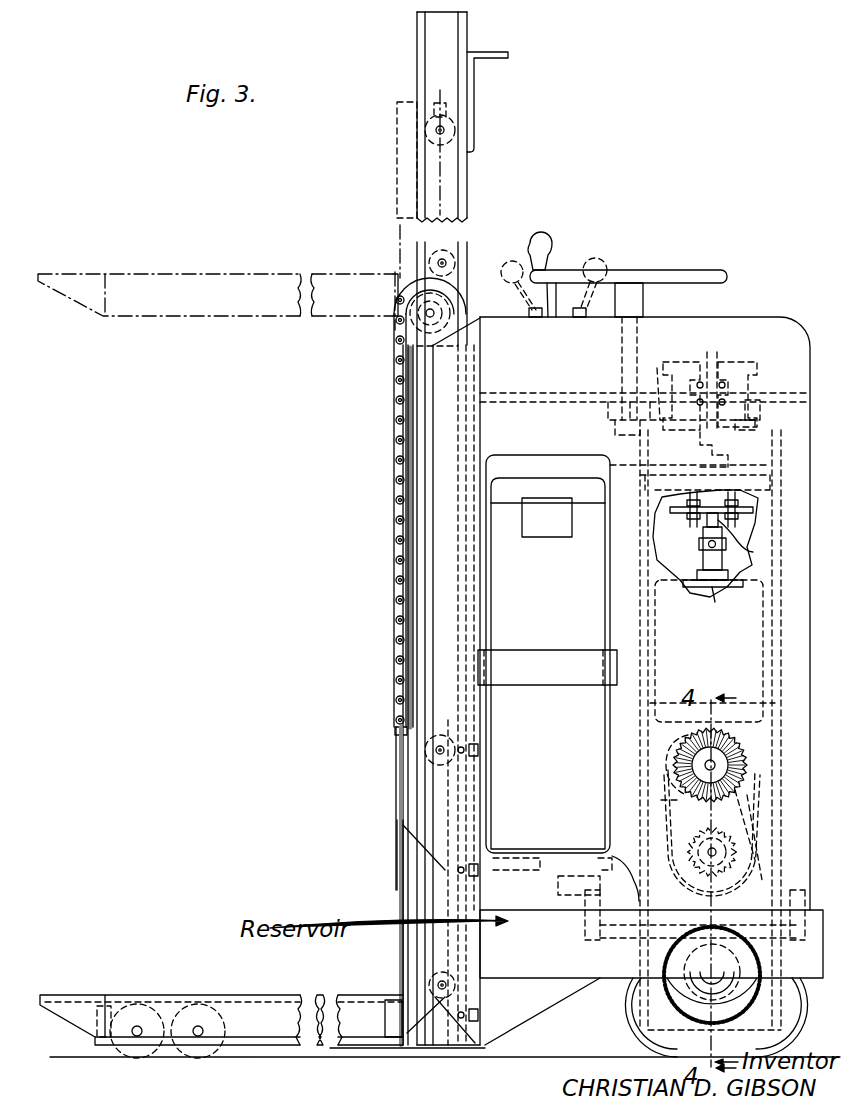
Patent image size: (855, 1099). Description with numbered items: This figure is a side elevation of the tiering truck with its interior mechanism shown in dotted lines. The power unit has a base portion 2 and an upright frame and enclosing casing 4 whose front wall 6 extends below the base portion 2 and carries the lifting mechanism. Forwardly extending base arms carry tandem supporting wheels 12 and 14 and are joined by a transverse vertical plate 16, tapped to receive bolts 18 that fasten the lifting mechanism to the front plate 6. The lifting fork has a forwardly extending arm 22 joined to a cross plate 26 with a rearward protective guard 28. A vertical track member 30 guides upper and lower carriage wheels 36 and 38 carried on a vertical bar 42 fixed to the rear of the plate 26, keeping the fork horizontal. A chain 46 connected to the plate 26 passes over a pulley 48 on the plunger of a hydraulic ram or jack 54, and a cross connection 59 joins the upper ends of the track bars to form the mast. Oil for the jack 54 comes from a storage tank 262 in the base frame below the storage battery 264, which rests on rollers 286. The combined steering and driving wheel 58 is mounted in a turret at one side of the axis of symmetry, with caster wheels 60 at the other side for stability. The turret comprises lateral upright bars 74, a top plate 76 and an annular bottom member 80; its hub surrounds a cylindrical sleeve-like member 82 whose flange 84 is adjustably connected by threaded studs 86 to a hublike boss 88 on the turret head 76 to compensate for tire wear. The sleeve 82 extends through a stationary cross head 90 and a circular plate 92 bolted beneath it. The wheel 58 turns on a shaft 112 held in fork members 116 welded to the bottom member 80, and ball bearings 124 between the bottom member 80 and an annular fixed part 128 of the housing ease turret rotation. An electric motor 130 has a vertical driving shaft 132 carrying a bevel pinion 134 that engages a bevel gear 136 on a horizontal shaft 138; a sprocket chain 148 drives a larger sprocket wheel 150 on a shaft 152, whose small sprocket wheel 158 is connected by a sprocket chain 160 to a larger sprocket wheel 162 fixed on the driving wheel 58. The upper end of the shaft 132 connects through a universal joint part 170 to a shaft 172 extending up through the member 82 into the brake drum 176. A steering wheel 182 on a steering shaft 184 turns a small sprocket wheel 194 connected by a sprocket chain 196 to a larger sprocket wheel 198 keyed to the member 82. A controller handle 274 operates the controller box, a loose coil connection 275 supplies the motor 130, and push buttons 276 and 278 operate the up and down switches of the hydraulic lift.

The base portion 2 is at (610, 990).
The upright supporting frame and enclosing casing 4 is at (812, 600).
The front plate 6 is at (440, 372).
The tandem supporting wheel 12 is at (200, 1048).
The tandem supporting wheel 14 is at (138, 1048).
The transverse vertical plate 16 is at (470, 712).
The machine screws or bolts 18 is at (478, 748).
The fork arm 22 is at (200, 270).
The cross plate 26 is at (402, 822).
The protective flange or guard 28 is at (418, 1018).
The vertical track member 30 is at (455, 34).
The upper carriage wheel 36 is at (435, 745).
The lower carriage wheel 38 is at (428, 240).
The vertical plate or bar 42 is at (410, 800).
The chain 46 is at (394, 540).
The pulley 48 is at (394, 292).
The hydraulic ram or jack 54 is at (403, 468).
The combined steering and driving wheel 58 is at (680, 1040).
The cross connection 59 is at (508, 56).
The caster wheels 60 is at (780, 1020).
The lateral upright bars 74 is at (640, 598).
The top plate 76 is at (600, 470).
The annular bottom member 80 is at (608, 852).
The cylindrical sleeve-like member 82 is at (700, 450).
The flange 84 is at (690, 527).
The threaded rods or studs 86 is at (703, 542).
The hublike boss 88 is at (752, 490).
The stationary cross head 90 is at (503, 393).
The circular plate 92 is at (760, 410).
The shaft 112 is at (678, 989).
The fork members 116 is at (700, 960).
The ball bearings 124 is at (610, 915).
The annular fixed part 128 is at (600, 940).
The electric motor 130 is at (655, 634).
The driving shaft 132 is at (717, 592).
The bevel pinion 134 is at (665, 700).
The bevel gear 136 is at (663, 765).
The horizontal shaft 138 is at (715, 765).
The sprocket chain 148 is at (647, 799).
The larger sprocket wheel 150 is at (672, 822).
The shaft 152 is at (738, 852).
The small sprocket wheel 158 is at (742, 810).
The sprocket chain 160 is at (777, 912).
The larger sprocket wheel 162 is at (626, 912).
The universal joint part 170 is at (697, 558).
The shaft 172 is at (753, 547).
The brake drum 176 is at (735, 362).
The steering wheel 182 is at (727, 274).
The steering shaft 184 is at (643, 303).
The small sprocket wheel 194 is at (610, 432).
The sprocket chain 196 is at (667, 373).
The larger sprocket wheel 198 is at (755, 428).
The storage tank 262 is at (555, 850).
The storage battery 264 is at (535, 755).
The controller handle 274 is at (588, 255).
The loose coil connection 275 is at (670, 510).
The up push button 276 is at (585, 310).
The down push button 278 is at (527, 309).
The rollers 286 is at (581, 892).